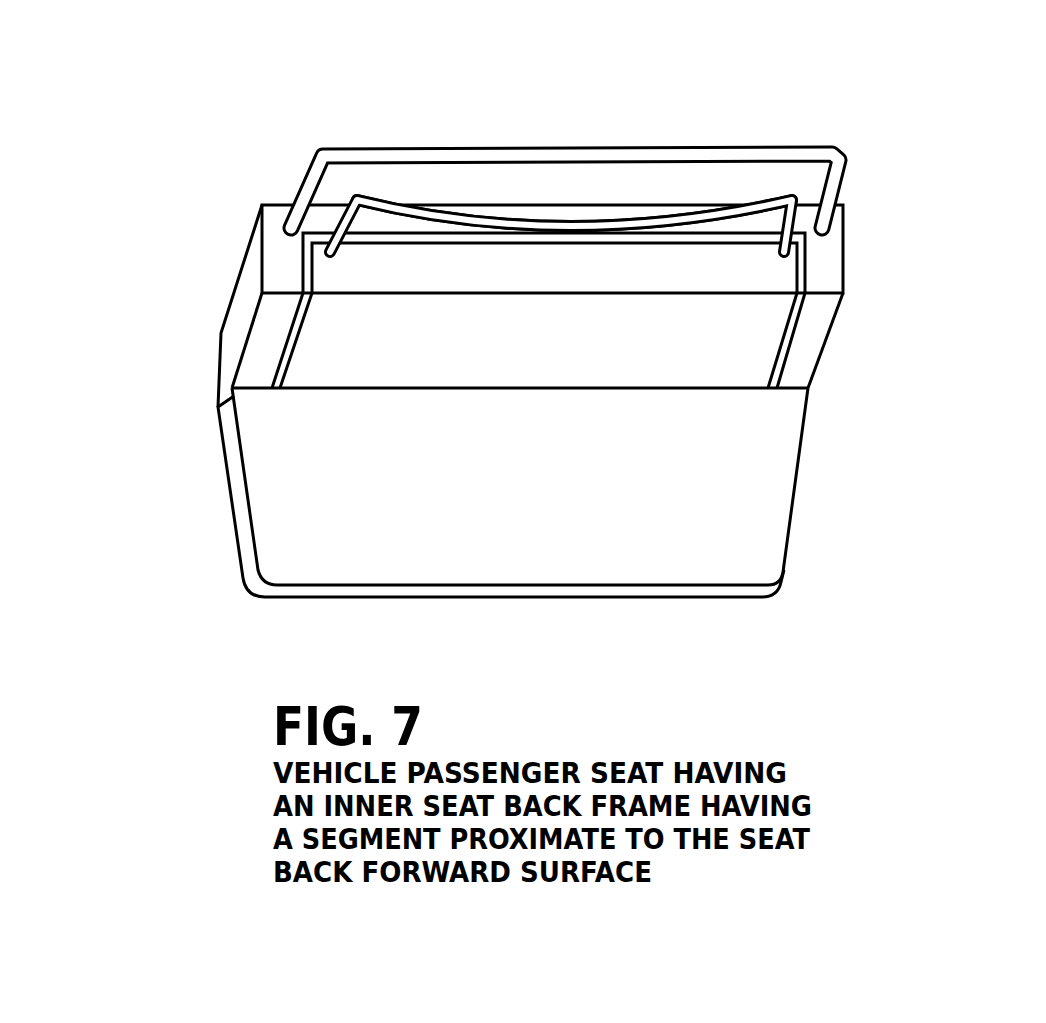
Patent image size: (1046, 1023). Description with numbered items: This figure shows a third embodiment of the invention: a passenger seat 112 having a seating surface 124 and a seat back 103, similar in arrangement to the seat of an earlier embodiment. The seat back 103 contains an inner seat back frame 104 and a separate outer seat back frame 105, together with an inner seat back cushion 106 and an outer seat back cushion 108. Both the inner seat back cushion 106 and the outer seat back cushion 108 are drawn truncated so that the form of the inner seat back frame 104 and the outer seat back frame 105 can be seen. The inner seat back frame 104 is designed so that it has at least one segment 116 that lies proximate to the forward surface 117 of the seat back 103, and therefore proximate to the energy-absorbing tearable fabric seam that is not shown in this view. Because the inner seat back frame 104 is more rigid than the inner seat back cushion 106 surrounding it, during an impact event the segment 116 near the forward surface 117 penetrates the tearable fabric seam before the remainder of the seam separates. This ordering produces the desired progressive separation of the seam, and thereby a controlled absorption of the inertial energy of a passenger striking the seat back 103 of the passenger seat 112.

The seat back 103 is at (230, 344).
The inner seat back frame 104 is at (353, 193).
The outer seat back frame 105 is at (412, 146).
The inner seat back cushion 106 is at (356, 273).
The outer seat back cushion 108 is at (272, 213).
The passenger seat 112 is at (745, 484).
The segment 116 is at (581, 214).
The forward surface 117 is at (528, 362).
The seating surface 124 is at (706, 548).